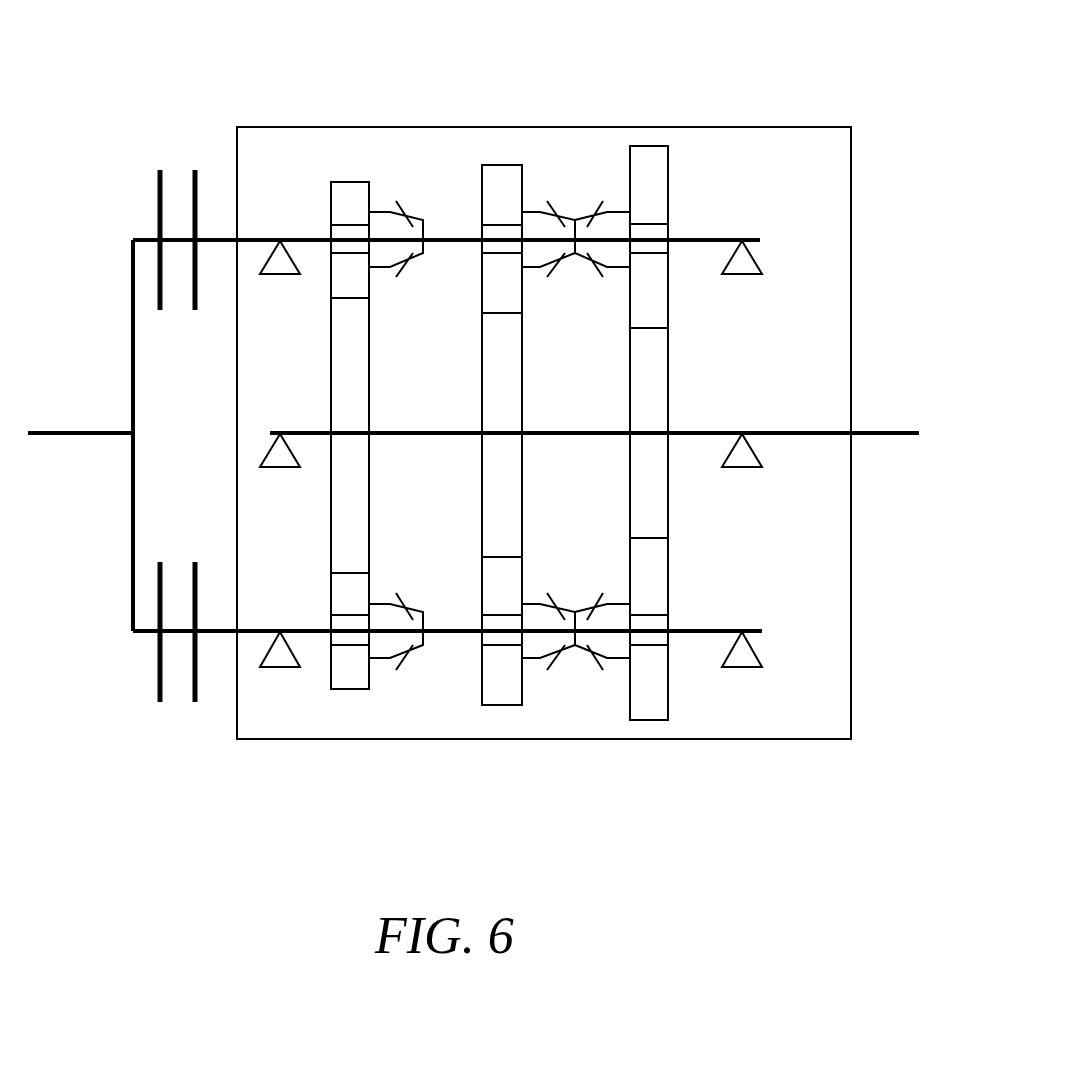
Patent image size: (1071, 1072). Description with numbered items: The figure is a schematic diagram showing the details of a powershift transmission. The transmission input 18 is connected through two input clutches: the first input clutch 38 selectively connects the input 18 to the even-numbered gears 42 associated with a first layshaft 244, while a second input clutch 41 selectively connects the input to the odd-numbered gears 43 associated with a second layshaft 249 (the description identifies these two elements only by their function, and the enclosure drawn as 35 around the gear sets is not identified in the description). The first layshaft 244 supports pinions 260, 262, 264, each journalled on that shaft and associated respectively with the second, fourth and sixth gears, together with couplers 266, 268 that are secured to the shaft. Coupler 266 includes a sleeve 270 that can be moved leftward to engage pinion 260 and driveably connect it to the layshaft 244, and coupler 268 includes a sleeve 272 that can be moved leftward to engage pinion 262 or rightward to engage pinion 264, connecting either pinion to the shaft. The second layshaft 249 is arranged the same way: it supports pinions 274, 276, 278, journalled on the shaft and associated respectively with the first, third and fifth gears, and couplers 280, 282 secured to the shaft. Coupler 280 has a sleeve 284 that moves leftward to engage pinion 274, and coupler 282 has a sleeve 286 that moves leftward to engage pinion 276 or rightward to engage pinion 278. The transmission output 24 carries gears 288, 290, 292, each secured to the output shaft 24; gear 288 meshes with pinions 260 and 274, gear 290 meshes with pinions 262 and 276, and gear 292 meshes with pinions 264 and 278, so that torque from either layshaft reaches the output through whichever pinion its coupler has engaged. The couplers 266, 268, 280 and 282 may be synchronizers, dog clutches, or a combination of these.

The input 18 is at (95, 433).
The transmission output 24 is at (888, 433).
The transmission housing 35 is at (545, 127).
The first input clutch 38 is at (157, 655).
The first clutch 41 is at (157, 212).
The even-numbered gears 42 is at (401, 716).
The first sub-transmission 43 is at (402, 148).
The first layshaft 244 is at (222, 633).
The second layshaft 249 is at (217, 240).
The pinion 260 is at (330, 597).
The pinion 262 is at (482, 580).
The pinion 264 is at (668, 575).
The coupler 266 is at (425, 637).
The coupler 268 is at (580, 650).
The sleeve 270 is at (408, 600).
The sleeve 272 is at (560, 600).
The pinion 274 is at (352, 182).
The pinion 276 is at (502, 165).
The pinion 278 is at (648, 146).
The coupler 280 is at (425, 227).
The coupler 282 is at (583, 255).
The sleeve 284 is at (412, 268).
The sleeve 286 is at (565, 200).
The gear 288 is at (369, 487).
The gear 290 is at (522, 480).
The gear 292 is at (668, 505).